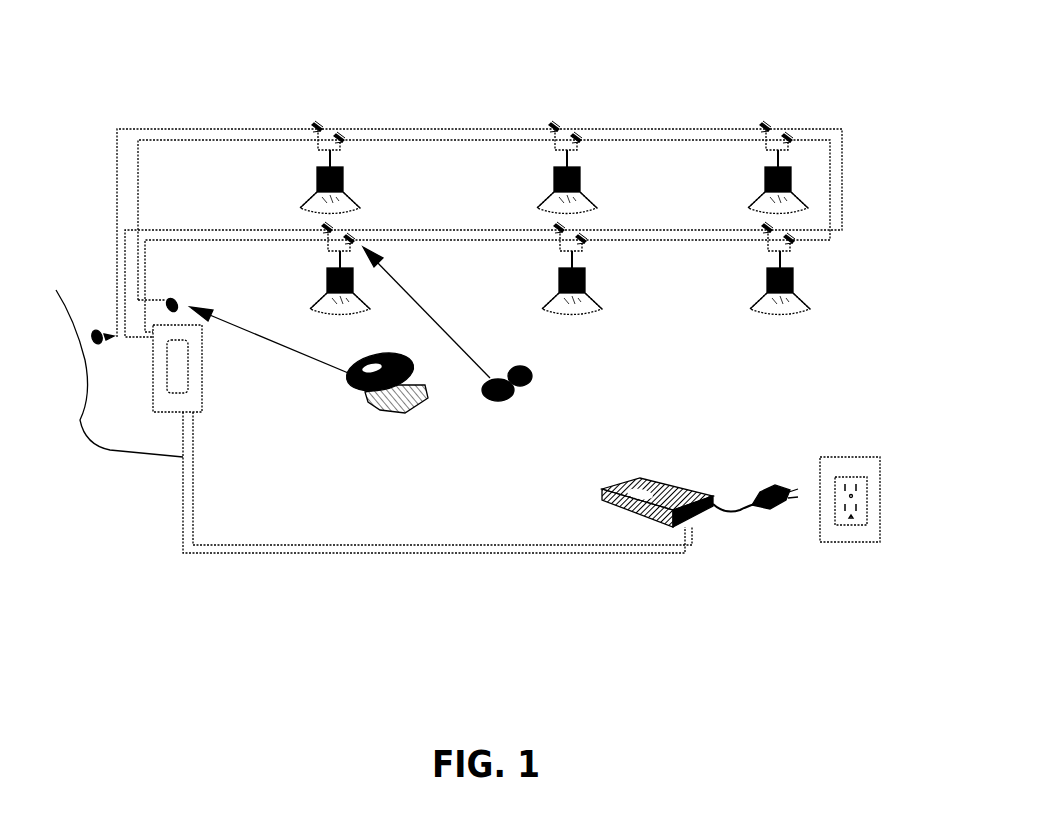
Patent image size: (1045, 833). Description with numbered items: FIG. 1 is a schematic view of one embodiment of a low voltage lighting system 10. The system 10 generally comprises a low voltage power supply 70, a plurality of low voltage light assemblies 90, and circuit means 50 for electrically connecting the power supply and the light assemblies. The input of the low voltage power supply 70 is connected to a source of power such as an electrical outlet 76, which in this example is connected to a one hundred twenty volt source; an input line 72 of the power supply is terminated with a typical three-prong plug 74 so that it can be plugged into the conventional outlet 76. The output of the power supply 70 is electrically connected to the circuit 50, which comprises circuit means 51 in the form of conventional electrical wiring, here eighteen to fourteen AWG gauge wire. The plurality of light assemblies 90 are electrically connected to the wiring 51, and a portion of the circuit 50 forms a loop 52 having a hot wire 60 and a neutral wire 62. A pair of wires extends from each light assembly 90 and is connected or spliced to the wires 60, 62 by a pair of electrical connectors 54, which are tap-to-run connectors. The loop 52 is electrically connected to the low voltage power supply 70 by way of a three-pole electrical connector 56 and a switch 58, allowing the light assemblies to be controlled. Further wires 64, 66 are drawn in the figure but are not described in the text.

The system 10 is at (543, 44).
The circuit means 50 is at (65, 193).
The wiring 51 is at (117, 258).
The loop 52 is at (872, 130).
The electrical connectors 54 is at (340, 136).
The three-pole electrical connector 56 is at (170, 296).
The switch 58 is at (202, 400).
The hot wire 60 is at (180, 128).
The neutral wire 62 is at (228, 140).
The third wire 64 is at (272, 553).
The fourth wire 66 is at (316, 545).
The low voltage power supply 70 is at (665, 478).
The input line 72 is at (718, 515).
The three-prong plug 74 is at (765, 490).
The electrical outlet 76 is at (863, 457).
The low voltage light assemblies 90 is at (316, 183).